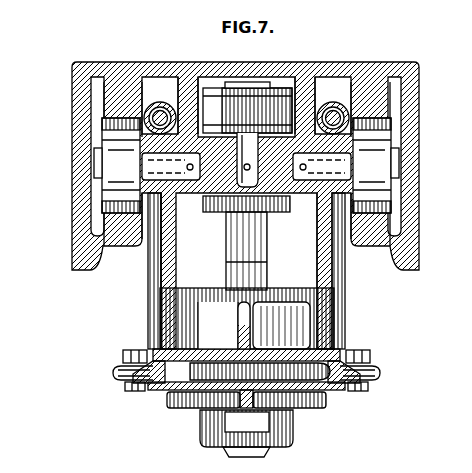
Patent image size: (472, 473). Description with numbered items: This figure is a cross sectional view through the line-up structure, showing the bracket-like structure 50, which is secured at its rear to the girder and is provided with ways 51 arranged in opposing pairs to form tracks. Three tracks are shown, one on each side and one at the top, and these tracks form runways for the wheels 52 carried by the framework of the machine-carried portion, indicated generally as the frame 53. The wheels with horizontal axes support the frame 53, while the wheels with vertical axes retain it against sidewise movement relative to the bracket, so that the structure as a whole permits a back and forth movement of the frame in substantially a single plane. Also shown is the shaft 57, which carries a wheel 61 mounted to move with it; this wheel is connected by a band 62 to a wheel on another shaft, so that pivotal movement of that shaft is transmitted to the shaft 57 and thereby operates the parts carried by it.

The bracket-like structure 50 is at (257, 67).
The ways 51 is at (120, 118).
The wheels 52 is at (226, 100).
The frame 53 is at (172, 268).
The shaft 57 is at (238, 217).
The wheel 61 is at (202, 388).
The band 62 is at (217, 350).